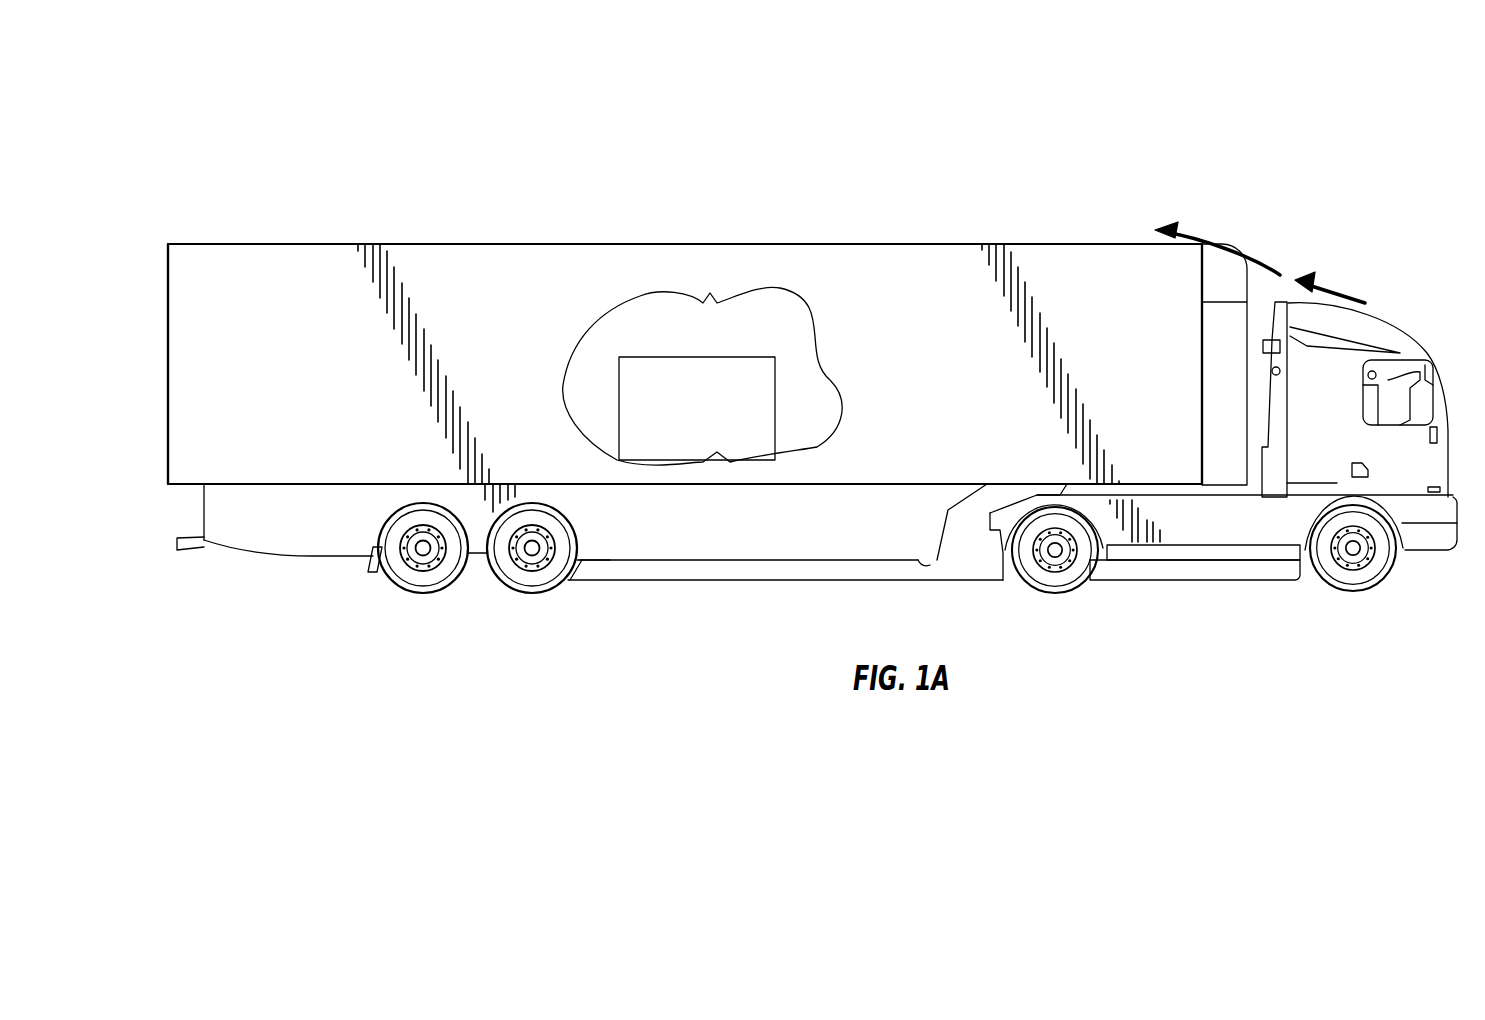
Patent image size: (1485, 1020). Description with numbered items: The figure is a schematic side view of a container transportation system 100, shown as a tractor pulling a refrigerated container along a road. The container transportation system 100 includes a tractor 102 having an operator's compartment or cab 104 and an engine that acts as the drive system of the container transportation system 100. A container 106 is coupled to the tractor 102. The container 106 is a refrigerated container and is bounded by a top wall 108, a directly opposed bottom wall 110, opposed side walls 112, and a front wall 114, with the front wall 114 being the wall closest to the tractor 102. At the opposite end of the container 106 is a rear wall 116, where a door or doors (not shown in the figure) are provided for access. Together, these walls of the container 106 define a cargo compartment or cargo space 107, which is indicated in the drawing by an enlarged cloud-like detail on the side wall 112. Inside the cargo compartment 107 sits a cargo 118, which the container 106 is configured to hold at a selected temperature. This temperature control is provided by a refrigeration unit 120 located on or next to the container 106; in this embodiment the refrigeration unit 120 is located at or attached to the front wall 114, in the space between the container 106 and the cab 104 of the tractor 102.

The container transportation system 100 is at (783, 347).
The tractor 102 is at (1223, 441).
The cab 104 is at (1397, 373).
The container 106 is at (678, 415).
The cargo compartment 107 is at (603, 335).
The top wall 108 is at (880, 244).
The bottom wall 110 is at (665, 484).
The side walls 112 is at (738, 378).
The front wall 114 is at (1202, 373).
The rear wall 116 is at (167, 297).
The cargo 118 is at (697, 408).
The refrigeration unit 120 is at (1222, 447).